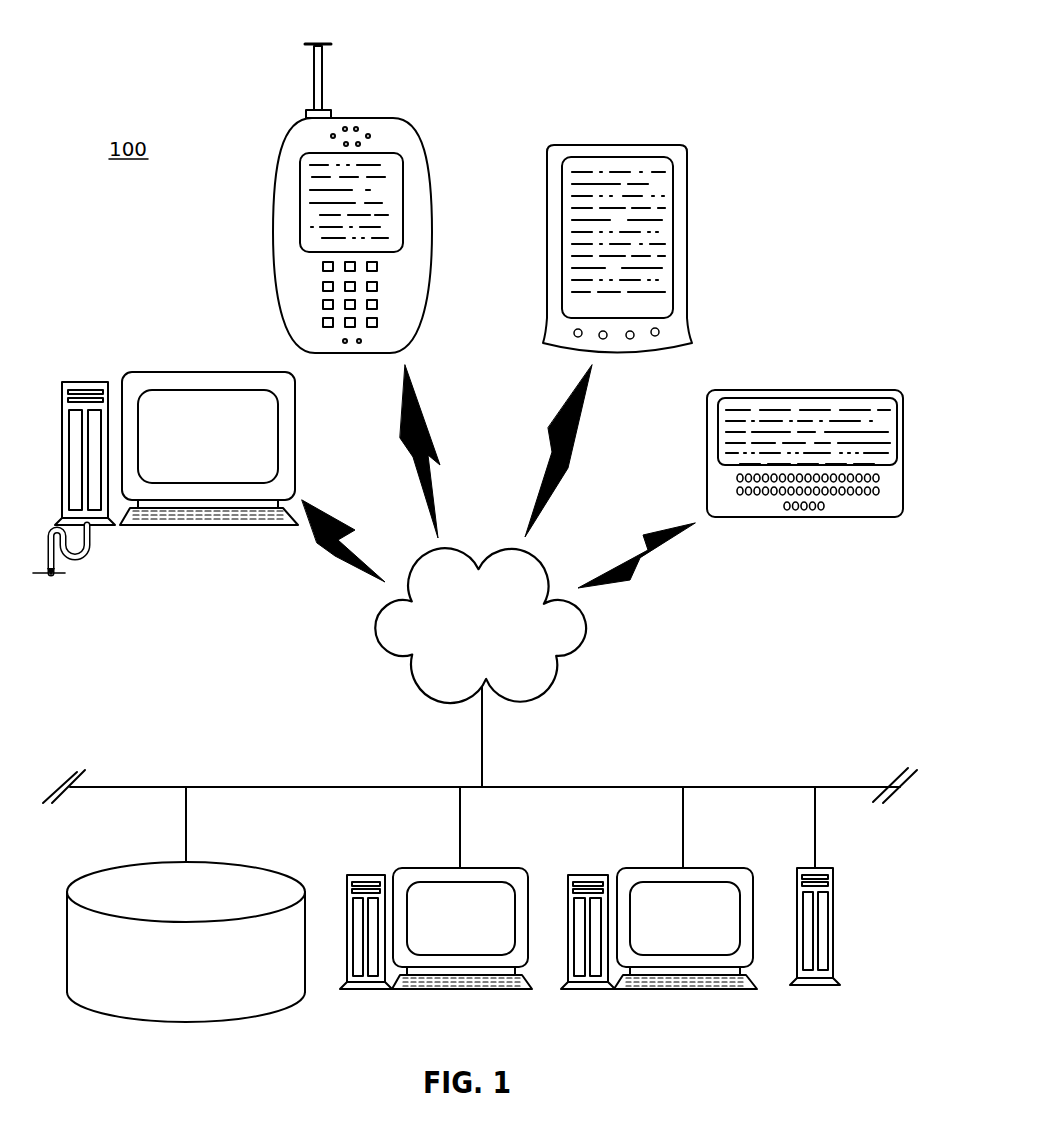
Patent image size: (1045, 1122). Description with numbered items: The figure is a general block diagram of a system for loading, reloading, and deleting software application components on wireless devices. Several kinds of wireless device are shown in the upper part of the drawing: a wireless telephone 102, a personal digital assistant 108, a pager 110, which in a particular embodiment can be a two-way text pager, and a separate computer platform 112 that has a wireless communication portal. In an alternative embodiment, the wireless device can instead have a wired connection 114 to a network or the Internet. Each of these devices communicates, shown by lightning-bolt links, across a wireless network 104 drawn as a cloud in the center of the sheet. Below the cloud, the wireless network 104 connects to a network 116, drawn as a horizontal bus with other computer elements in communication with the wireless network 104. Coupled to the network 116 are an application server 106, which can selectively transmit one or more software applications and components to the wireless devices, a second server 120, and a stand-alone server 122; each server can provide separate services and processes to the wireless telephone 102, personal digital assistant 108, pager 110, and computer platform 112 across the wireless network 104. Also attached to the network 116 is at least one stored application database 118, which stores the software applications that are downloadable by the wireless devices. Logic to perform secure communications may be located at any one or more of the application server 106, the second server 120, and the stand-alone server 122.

The wireless telephone 102 is at (412, 152).
The wireless network 104 is at (582, 625).
The application server 106 is at (437, 868).
The personal digital assistant 108 is at (620, 145).
The pager 110 is at (840, 518).
The computer platform 112 is at (200, 370).
The wired connection 114 is at (101, 562).
The network 116 is at (722, 786).
The stored application database 118 is at (188, 1021).
The second server 120 is at (667, 868).
The stand-alone server 122 is at (837, 902).